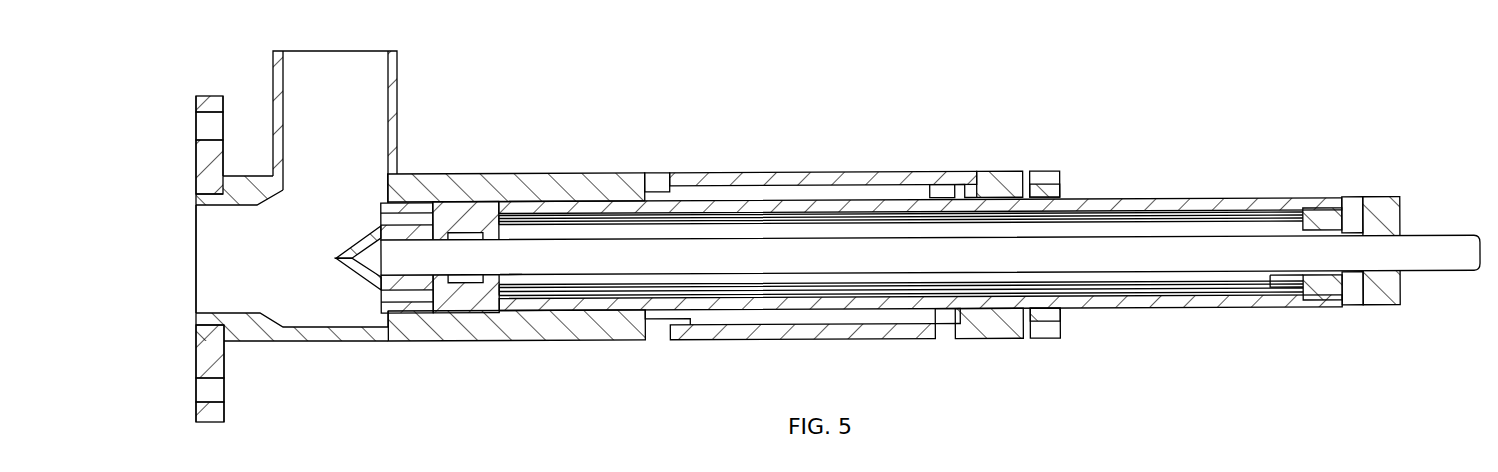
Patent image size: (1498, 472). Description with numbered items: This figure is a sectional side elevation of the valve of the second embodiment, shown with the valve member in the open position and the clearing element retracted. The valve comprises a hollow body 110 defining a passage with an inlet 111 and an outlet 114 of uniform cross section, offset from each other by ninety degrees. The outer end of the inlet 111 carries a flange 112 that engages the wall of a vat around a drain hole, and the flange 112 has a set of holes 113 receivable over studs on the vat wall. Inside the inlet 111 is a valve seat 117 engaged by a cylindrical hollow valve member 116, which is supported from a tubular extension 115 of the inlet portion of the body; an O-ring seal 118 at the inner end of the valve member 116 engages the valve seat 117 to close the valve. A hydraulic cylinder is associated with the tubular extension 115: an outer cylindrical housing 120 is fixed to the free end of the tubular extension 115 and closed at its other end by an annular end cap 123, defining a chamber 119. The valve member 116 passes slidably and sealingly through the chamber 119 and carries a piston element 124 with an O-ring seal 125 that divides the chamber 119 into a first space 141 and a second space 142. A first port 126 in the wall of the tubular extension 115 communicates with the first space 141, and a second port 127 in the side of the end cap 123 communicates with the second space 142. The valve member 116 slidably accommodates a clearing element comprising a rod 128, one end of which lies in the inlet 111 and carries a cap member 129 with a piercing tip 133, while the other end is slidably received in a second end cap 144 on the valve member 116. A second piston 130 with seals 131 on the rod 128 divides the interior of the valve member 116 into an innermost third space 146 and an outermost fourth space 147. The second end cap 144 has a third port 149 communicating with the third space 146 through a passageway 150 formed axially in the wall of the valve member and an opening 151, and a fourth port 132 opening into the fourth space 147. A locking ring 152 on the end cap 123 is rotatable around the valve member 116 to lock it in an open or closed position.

The hollow body 110 is at (527, 107).
The inlet 111 is at (215, 266).
The flange 112 is at (200, 181).
The holes 113 is at (210, 117).
The outlet 114 is at (335, 73).
The tubular extension 115 is at (549, 175).
The valve member 116 is at (490, 176).
The valve seat 117 is at (217, 312).
The O-ring seal 118 is at (445, 176).
The chamber 119 is at (717, 318).
The outer cylindrical housing 120 is at (748, 176).
The annular end cap 123 is at (1002, 178).
The piston element 124 is at (940, 318).
The O-ring seal 125 is at (945, 186).
The first port 126 is at (655, 178).
The second port 127 is at (985, 180).
The rod 128 is at (603, 262).
The cap member 129 is at (368, 267).
The second piston 130 is at (1278, 292).
The seals 131 is at (1292, 212).
The fourth port 132 is at (1357, 208).
The piercing tip 133 is at (360, 242).
The first space 141 is at (816, 320).
The second space 142 is at (976, 317).
The second end cap 144 is at (1384, 300).
The third space 146 is at (1156, 281).
The fourth space 147 is at (1320, 298).
The third port 149 is at (1350, 310).
The passageway 150 is at (1101, 297).
The opening 151 is at (510, 273).
The locking ring 152 is at (1056, 192).